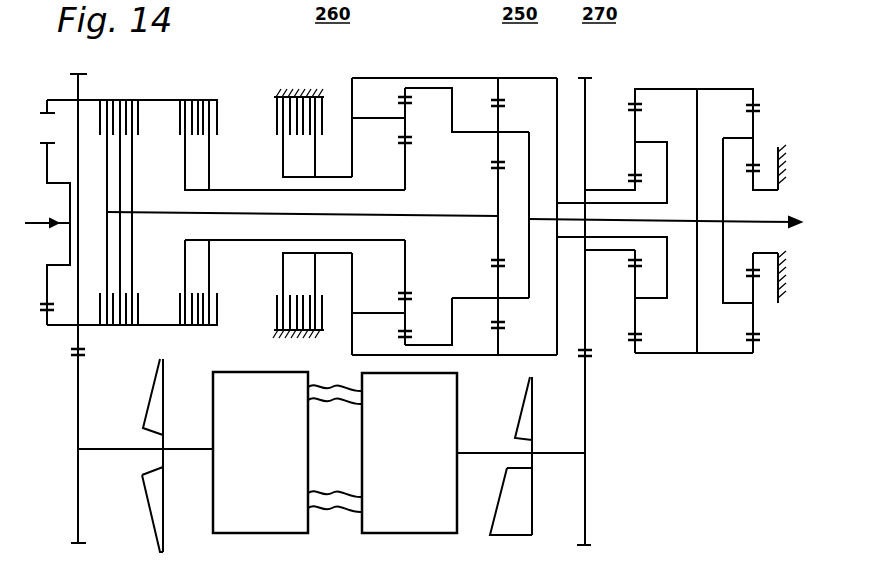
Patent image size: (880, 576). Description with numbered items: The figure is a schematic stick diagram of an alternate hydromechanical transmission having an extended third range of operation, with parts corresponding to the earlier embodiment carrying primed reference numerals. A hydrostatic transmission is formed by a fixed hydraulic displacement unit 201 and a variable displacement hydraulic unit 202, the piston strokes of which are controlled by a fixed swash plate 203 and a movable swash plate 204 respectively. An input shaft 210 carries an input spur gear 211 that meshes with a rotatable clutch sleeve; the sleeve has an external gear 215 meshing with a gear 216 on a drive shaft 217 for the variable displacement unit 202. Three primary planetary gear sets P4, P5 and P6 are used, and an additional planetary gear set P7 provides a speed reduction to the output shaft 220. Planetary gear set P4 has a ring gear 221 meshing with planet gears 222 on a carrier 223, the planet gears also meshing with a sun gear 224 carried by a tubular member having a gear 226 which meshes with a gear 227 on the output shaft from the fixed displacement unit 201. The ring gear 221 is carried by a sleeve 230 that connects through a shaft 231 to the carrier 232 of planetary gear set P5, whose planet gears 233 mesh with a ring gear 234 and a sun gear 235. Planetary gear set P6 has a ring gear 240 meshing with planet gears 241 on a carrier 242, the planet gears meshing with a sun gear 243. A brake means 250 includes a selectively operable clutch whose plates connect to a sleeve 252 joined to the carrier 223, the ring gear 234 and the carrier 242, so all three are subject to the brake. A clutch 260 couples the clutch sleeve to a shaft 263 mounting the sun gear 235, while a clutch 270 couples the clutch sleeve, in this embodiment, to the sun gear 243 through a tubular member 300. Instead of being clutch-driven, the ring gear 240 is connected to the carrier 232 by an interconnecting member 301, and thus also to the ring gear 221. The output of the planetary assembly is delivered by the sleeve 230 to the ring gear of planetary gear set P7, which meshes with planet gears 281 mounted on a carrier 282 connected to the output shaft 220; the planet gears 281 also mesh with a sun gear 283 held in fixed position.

The input shaft 210 is at (47, 228).
The input spur gear 211 is at (47, 176).
The external gear 215 is at (80, 338).
The gear 216 is at (78, 398).
The drive shaft 217 is at (110, 452).
The movable swash plate 204 is at (163, 530).
The variable displacement hydraulic unit 202 is at (290, 493).
The fixed hydraulic displacement unit 201 is at (440, 496).
The fixed swash plate 203 is at (503, 536).
The clutch 260 is at (111, 95).
The shaft 263 is at (160, 214).
The clutch 270 is at (207, 94).
The tubular member 300 is at (231, 243).
The brake means 250 is at (297, 93).
The sleeve 252 is at (352, 344).
The planetary gear set P6 is at (394, 72).
The ring gear 240 is at (397, 89).
The planet gears 241 is at (407, 115).
The carrier 242 is at (368, 313).
The sun gear 243 is at (406, 265).
The planetary gear set P5 is at (512, 75).
The carrier 232 is at (528, 234).
The interconnecting member 301 is at (470, 297).
The ring gear 234 is at (505, 90).
The sun gear 235 is at (497, 176).
The planet gears 233 is at (503, 310).
The shaft 231 is at (688, 225).
The sun gear 283 is at (773, 200).
The planetary gear set P4 is at (645, 78).
The sleeve 230 is at (709, 355).
The carrier 223 is at (660, 142).
The sun gear 224 is at (632, 180).
The planet gears 222 is at (633, 317).
The ring gear 221 is at (633, 345).
The gear 226 is at (586, 105).
The gear 227 is at (586, 489).
The planetary gear set P7 is at (760, 77).
The planet gears 281 is at (765, 108).
The output shaft 220 is at (747, 253).
The carrier 282 is at (740, 305).